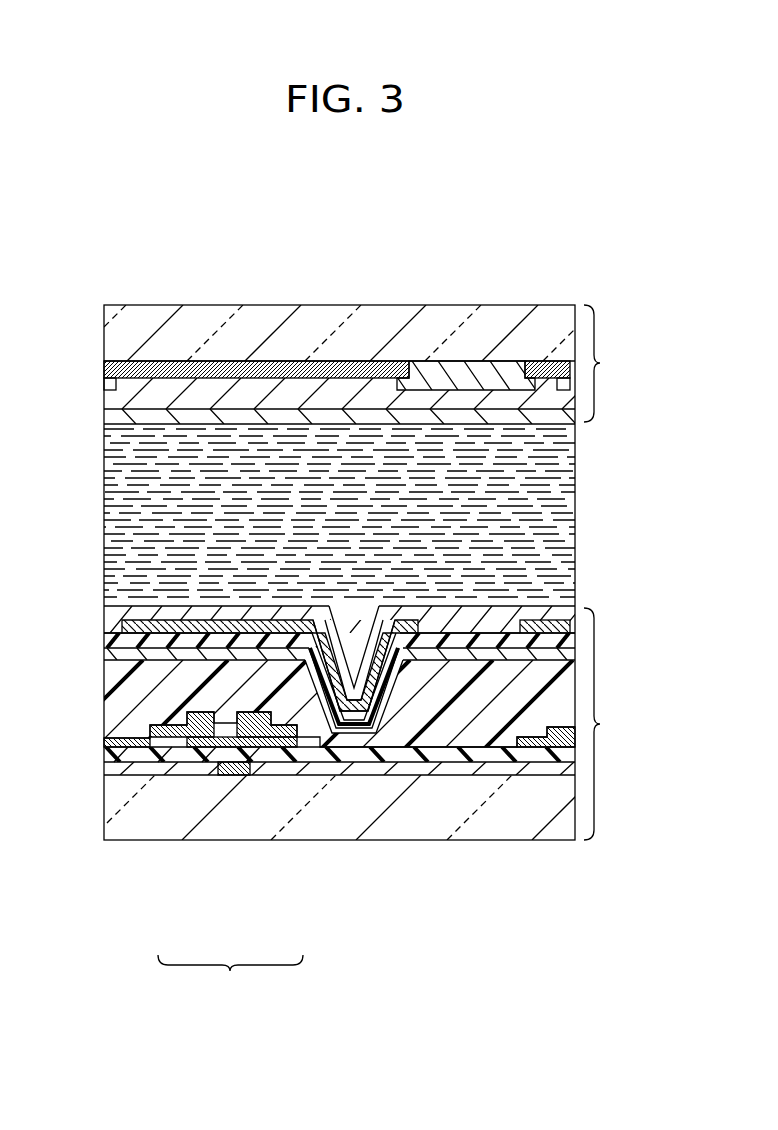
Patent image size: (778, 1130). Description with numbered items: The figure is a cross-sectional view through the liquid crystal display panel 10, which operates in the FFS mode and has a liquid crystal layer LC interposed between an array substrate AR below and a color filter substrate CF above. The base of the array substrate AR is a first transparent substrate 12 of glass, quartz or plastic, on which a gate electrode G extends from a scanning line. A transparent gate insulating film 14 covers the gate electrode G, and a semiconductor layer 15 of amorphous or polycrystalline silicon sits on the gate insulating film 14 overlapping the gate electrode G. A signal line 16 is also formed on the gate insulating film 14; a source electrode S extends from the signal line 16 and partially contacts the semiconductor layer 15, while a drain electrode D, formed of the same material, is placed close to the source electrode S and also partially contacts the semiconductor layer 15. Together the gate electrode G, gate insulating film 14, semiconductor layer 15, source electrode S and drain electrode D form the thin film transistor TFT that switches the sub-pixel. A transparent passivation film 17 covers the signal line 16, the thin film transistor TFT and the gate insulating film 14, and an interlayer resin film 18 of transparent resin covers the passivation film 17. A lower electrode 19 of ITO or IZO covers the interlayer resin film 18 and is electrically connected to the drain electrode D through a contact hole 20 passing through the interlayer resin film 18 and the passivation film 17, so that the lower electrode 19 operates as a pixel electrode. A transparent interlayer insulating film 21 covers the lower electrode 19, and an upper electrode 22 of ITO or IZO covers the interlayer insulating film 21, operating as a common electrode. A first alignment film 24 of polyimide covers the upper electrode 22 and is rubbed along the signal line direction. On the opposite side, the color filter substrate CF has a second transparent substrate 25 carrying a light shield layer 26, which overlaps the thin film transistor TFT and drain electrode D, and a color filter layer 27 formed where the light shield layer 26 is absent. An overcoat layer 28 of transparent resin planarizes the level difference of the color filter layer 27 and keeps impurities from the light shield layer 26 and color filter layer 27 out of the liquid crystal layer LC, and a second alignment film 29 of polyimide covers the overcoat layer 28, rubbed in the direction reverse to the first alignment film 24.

The liquid crystal display panel 10 is at (180, 225).
The first transparent substrate 12 is at (510, 815).
The gate insulating film 14 is at (393, 768).
The semiconductor layer 15 is at (240, 755).
The signal line 16 is at (138, 768).
The passivation film 17 is at (445, 755).
The interlayer resin film 18 is at (122, 702).
The lower electrode 19 is at (298, 648).
The contact hole 20 is at (355, 650).
The interlayer insulating film 21 is at (255, 622).
The upper electrode 22 is at (195, 620).
The first alignment film 24 is at (462, 623).
The second transparent substrate 25 is at (313, 330).
The light shield layer 26 is at (373, 362).
The color filter layer 27 is at (502, 372).
The overcoat layer 28 is at (423, 397).
The second alignment film 29 is at (468, 417).
The source electrode S is at (202, 745).
The gate electrode G is at (233, 775).
The drain electrode D is at (268, 745).
The thin film transistor TFT is at (230, 978).
The color filter substrate CF is at (611, 363).
The liquid crystal layer LC is at (555, 488).
The array substrate AR is at (612, 724).